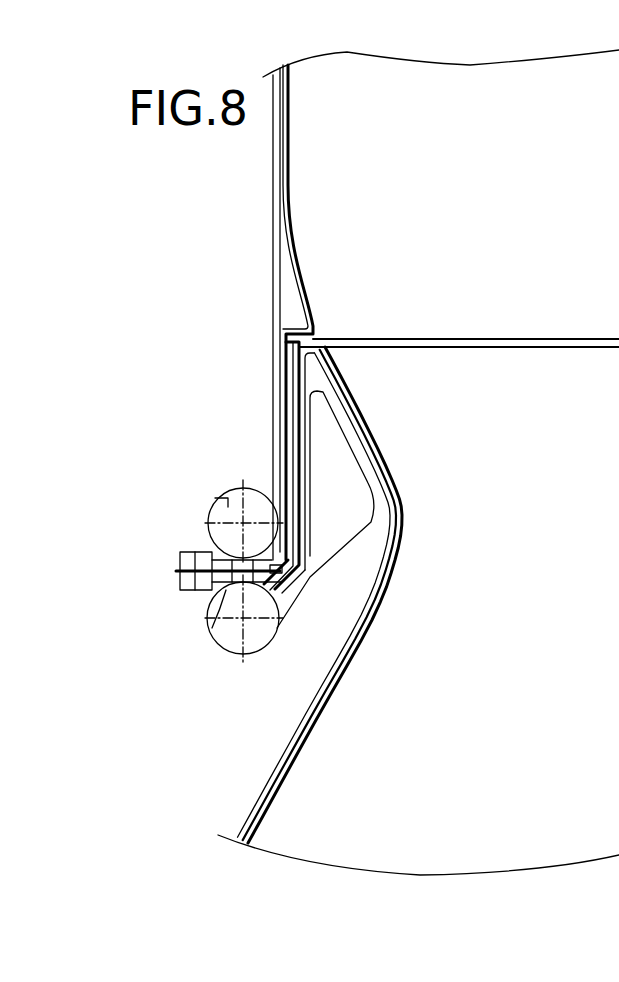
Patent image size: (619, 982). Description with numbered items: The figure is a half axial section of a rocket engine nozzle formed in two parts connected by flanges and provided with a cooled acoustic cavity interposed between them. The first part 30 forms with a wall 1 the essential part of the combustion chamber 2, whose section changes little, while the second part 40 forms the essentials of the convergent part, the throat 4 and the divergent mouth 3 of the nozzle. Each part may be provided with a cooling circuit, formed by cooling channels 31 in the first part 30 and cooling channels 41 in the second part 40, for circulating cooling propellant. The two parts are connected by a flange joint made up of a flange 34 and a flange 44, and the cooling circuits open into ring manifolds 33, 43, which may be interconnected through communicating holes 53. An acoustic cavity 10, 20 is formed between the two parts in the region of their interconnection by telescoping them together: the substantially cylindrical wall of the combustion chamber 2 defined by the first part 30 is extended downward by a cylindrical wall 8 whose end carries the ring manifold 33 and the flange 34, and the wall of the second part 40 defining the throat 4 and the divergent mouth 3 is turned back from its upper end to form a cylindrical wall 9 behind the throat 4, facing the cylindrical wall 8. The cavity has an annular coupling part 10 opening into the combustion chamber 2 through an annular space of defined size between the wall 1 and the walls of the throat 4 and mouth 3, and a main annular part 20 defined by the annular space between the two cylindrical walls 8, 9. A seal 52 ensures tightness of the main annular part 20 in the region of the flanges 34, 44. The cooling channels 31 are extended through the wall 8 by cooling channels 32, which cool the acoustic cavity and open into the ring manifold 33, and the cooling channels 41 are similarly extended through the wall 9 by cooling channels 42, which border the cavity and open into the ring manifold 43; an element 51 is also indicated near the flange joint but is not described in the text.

The wall 1 is at (272, 191).
The combustion chamber 2 is at (530, 148).
The divergent mouth 3 is at (262, 793).
The throat 4 is at (343, 595).
The cylindrical wall 8 is at (272, 461).
The cylindrical wall 9 is at (312, 455).
The annular coupling part 10 is at (499, 330).
The main annular part 20 is at (292, 398).
The first part 30 is at (268, 306).
The cooling channels 31 is at (291, 210).
The cooling channels 32 is at (288, 422).
The ring manifold 33 is at (216, 500).
The flange 34 is at (190, 553).
The second part 40 is at (306, 696).
The cooling channels 41 is at (338, 678).
The cooling channels 42 is at (300, 488).
The ring manifold 43 is at (240, 655).
The flange 44 is at (188, 592).
The shaft 51 is at (176, 572).
The seal 52 is at (282, 570).
The communicating holes 53 is at (212, 628).